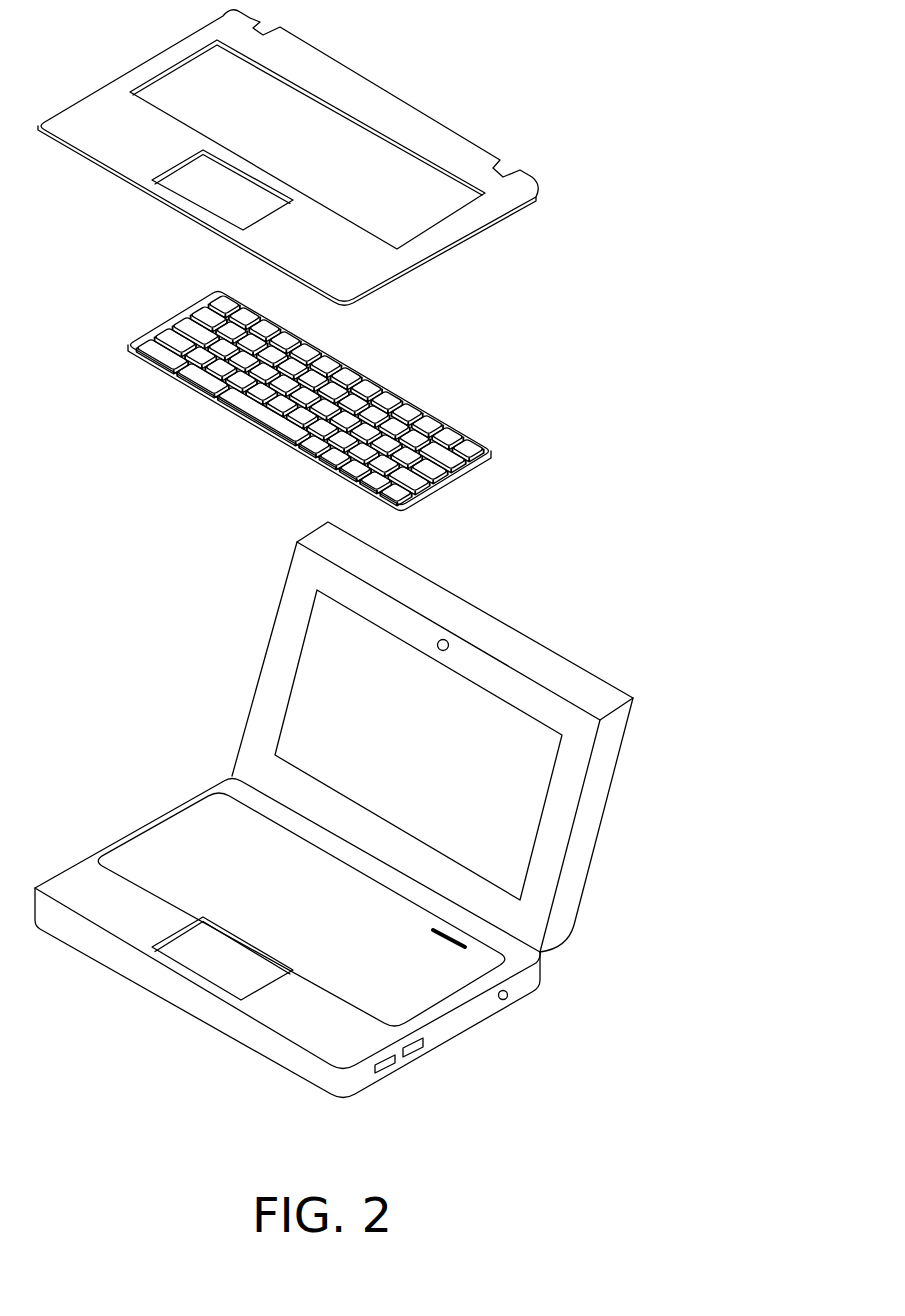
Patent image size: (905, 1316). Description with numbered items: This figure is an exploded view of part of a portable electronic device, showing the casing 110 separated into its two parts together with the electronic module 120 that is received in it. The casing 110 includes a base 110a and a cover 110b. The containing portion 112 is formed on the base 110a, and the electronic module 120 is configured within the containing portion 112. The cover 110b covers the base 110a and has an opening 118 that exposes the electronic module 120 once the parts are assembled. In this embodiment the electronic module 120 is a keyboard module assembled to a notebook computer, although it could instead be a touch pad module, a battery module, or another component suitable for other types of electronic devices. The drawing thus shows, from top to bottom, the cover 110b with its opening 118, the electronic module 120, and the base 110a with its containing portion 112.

The casing 110 is at (403, 549).
The base 110a is at (375, 791).
The cover 110b is at (377, 219).
The containing portion 112 is at (138, 836).
The opening 118 is at (324, 108).
The electronic module 120 is at (156, 333).